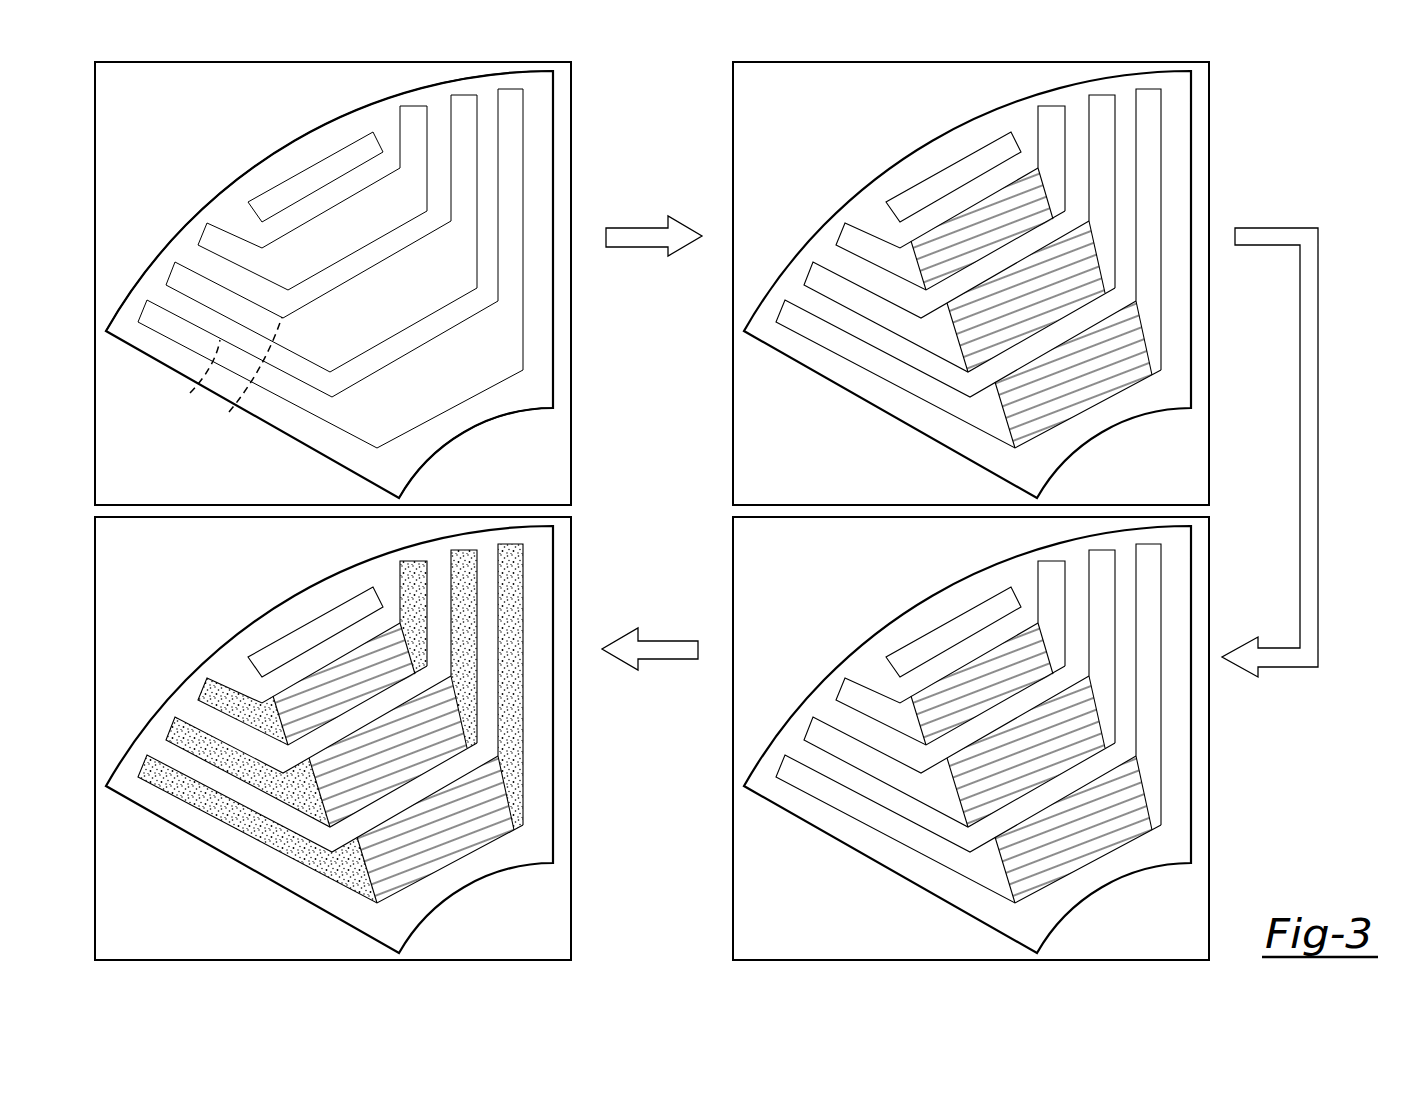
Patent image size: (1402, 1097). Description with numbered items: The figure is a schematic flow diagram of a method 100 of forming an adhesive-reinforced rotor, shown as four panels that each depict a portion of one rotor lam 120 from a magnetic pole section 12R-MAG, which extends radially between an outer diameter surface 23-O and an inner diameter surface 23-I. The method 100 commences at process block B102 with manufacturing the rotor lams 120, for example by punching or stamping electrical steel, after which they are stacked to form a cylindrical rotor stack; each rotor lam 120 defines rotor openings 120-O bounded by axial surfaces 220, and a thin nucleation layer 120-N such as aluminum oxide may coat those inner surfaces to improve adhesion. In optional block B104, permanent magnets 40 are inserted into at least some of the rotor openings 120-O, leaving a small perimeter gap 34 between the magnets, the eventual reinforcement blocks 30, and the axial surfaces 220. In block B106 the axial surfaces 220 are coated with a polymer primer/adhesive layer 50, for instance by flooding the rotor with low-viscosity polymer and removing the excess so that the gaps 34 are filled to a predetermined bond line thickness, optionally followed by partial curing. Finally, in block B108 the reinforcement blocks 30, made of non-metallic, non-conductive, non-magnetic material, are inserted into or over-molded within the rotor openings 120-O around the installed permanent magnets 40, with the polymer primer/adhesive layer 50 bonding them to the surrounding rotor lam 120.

The method 100 is at (1270, 138).
The rotor lam 120 is at (233, 209).
The rotor opening 120-O is at (383, 209).
The nucleation layer 120-N is at (422, 130).
The axial surface 220 is at (370, 266).
The outer diameter surface 23-O is at (292, 144).
The inner diameter surface 23-I is at (461, 434).
The gap 34 is at (1102, 290).
The permanent magnet 40 is at (992, 243).
The reinforcement block 30 is at (228, 698).
The polymer primer/adhesive layer 50 is at (855, 688).
The magnetic pole section 12R-MAG is at (601, 575).
The process block B102 is at (333, 283).
The process block B104 is at (971, 283).
The process block B106 is at (971, 738).
The process block B108 is at (333, 738).